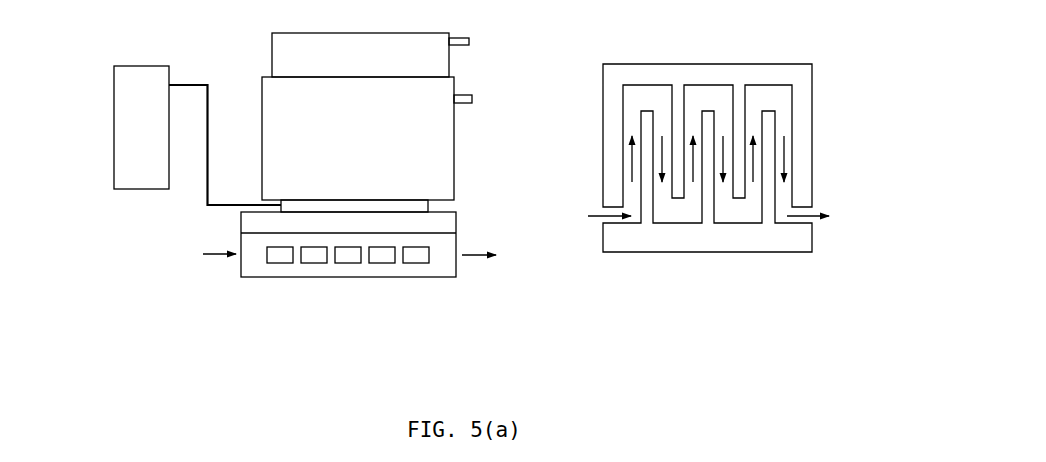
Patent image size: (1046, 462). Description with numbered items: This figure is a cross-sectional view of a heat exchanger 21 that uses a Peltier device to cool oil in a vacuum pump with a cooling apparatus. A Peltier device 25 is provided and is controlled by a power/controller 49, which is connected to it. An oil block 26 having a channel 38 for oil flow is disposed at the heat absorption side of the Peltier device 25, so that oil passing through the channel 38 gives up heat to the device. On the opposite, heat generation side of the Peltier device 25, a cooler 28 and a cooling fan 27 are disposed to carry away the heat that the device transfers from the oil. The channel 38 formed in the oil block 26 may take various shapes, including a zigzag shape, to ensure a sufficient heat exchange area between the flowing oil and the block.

The heat exchanger 21 is at (407, 116).
The Peltier device 25 is at (423, 208).
The oil block 26 is at (443, 245).
The cooling fan 27 is at (442, 65).
The cooler 28 is at (448, 147).
The channel 38 is at (417, 258).
The power/controller 49 is at (127, 148).